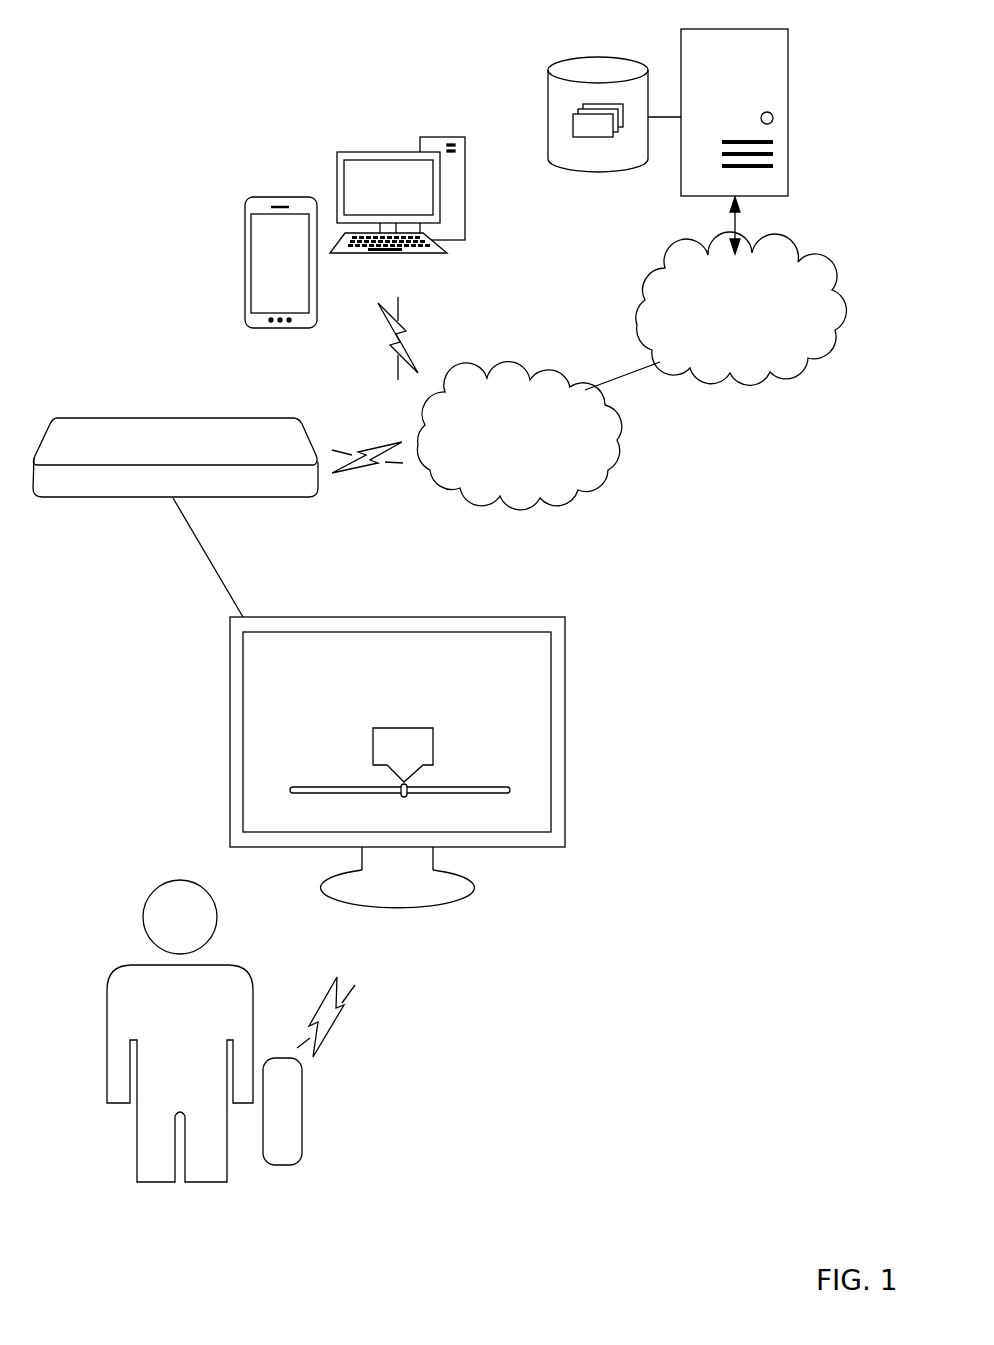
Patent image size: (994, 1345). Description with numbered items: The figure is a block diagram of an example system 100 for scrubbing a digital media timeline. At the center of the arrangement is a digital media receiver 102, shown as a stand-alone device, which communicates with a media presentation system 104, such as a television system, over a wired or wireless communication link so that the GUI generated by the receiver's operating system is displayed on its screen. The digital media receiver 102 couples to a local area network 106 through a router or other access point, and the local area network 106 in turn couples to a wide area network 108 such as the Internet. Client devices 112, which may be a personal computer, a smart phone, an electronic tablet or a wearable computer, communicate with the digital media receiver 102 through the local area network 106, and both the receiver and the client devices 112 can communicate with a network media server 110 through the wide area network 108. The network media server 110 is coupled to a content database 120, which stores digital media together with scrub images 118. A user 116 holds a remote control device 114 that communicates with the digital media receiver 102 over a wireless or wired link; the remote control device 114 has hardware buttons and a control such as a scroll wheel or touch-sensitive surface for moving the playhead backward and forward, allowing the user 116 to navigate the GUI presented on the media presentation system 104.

The system 100 is at (98, 92).
The digital media receiver 102 is at (177, 418).
The media presentation system 104 is at (230, 658).
The local area network 106 is at (455, 493).
The wide area network 108 is at (802, 266).
The network media server 110 is at (788, 83).
The client devices 112 is at (300, 157).
The remote control device 114 is at (302, 1088).
The user 116 is at (172, 882).
The scrub images 118 is at (597, 133).
The content database 120 is at (548, 80).